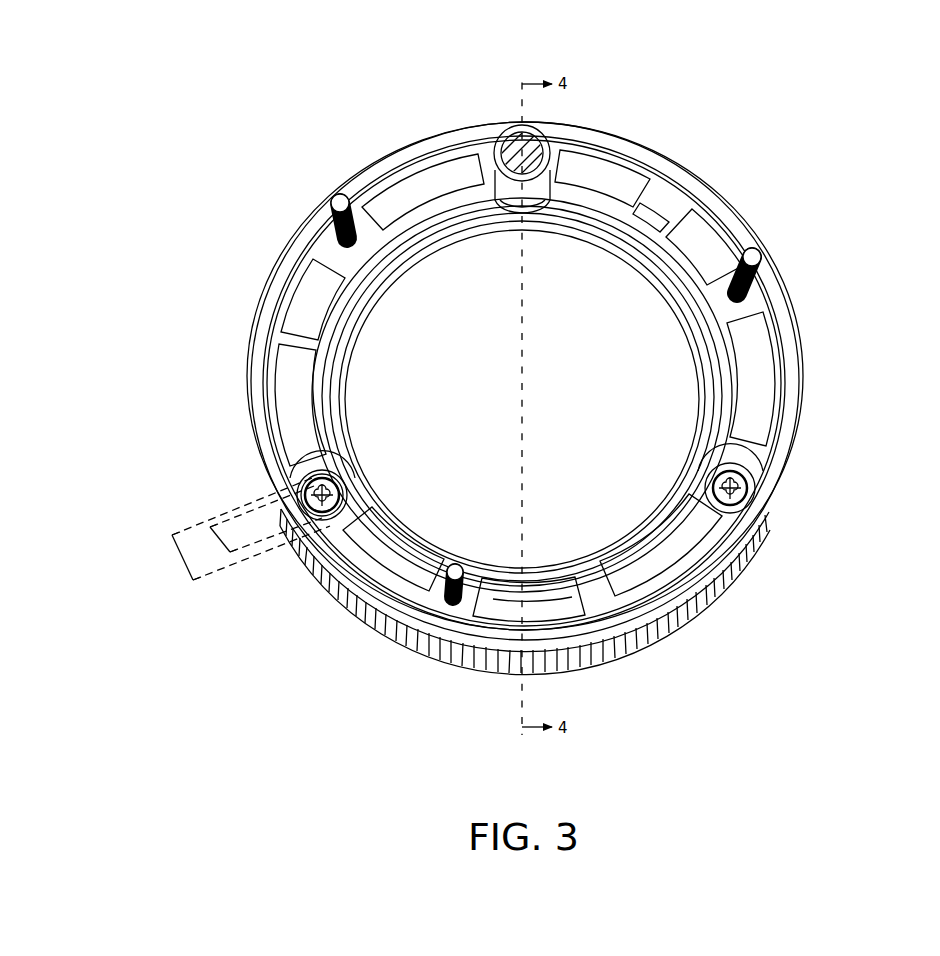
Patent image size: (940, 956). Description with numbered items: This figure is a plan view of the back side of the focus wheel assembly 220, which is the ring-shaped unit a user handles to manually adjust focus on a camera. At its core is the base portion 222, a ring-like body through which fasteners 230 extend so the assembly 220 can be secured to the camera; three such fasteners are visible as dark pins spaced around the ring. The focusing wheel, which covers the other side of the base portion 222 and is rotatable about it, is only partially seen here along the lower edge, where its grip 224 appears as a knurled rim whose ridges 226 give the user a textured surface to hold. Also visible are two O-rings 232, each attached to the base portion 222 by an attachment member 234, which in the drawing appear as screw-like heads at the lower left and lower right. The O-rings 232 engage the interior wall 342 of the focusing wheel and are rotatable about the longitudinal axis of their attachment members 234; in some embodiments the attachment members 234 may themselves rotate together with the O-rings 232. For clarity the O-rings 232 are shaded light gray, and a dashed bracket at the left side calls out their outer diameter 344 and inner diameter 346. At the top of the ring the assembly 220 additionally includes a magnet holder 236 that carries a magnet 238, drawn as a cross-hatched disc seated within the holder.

The focus wheel assembly 220 is at (256, 169).
The base portion 222 is at (300, 328).
The grip 224 is at (407, 645).
The ridges 226 is at (465, 661).
The fasteners 230 is at (339, 197).
The O-rings 232 is at (737, 507).
The attachment members 234 is at (736, 488).
The magnet holder 236 is at (549, 170).
The magnet 238 is at (515, 150).
The interior wall 342 is at (312, 522).
The outer diameter 344 is at (246, 530).
The inner diameter 346 is at (262, 524).